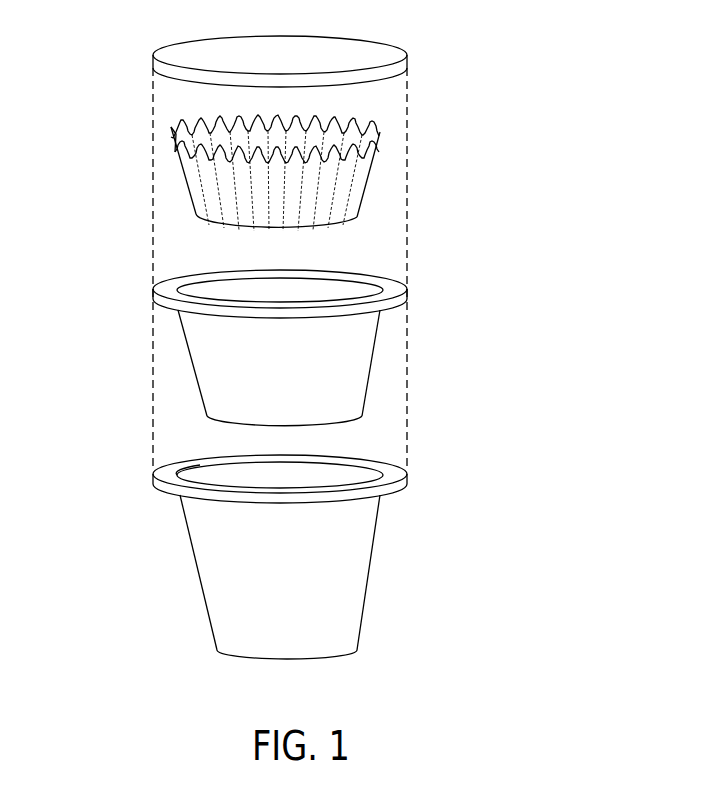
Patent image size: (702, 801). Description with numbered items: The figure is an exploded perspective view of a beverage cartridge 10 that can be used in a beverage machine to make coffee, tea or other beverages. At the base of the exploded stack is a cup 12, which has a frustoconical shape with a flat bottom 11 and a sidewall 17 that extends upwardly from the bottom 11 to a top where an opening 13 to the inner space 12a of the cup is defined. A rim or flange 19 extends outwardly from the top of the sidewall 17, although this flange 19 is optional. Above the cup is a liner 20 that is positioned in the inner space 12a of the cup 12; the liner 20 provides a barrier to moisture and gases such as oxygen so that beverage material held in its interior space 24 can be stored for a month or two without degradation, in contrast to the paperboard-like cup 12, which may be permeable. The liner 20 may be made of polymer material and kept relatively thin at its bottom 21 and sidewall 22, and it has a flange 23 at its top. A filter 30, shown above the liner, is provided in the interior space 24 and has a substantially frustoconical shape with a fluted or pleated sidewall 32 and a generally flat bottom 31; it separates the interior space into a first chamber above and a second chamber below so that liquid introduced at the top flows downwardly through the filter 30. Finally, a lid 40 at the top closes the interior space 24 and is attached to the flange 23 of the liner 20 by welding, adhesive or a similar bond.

The cartridge 10 is at (68, 75).
The lid 40 is at (380, 54).
The filter 30 is at (291, 178).
The bottom 31 is at (350, 223).
The sidewall 32 is at (184, 184).
The liner 20 is at (316, 336).
The flange 23 is at (407, 290).
The interior space 24 is at (211, 292).
The sidewall 22 is at (369, 392).
The bottom 21 is at (343, 424).
The cup 12 is at (278, 554).
The rim or flange 19 is at (407, 480).
The inner space 12a is at (368, 475).
The opening 13 is at (178, 474).
The sidewall 17 is at (362, 612).
The bottom 11 is at (238, 660).